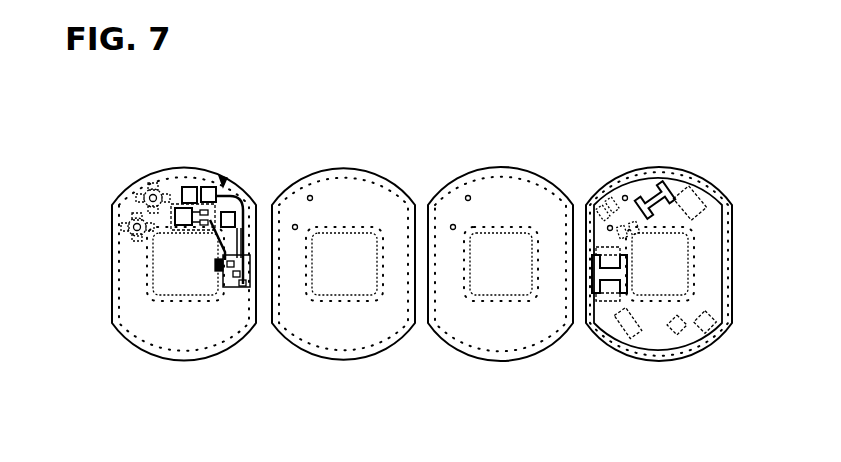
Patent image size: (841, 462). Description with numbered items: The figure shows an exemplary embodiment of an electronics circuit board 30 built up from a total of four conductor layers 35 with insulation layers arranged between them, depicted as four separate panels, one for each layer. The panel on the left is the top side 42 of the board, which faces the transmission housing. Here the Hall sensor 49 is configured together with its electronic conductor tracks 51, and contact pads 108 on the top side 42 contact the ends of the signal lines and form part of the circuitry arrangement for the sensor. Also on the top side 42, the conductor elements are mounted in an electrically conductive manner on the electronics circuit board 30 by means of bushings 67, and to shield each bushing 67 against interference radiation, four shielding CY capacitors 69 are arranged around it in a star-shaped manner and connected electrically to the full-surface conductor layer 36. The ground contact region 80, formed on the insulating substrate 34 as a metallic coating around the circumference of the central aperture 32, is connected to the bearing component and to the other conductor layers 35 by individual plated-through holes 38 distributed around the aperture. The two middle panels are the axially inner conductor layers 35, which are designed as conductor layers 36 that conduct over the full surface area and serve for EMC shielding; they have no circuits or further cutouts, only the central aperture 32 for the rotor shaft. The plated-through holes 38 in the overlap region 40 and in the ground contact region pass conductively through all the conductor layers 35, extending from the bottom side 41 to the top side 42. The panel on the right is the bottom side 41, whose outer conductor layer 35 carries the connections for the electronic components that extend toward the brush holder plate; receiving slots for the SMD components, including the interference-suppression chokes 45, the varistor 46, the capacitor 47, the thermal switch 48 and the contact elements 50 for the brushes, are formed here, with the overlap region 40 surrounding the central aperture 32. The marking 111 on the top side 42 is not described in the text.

The electronics circuit board 30 is at (732, 172).
The central aperture 32 is at (165, 285).
The insulating substrate 34 is at (186, 190).
The conductor layer 35 is at (128, 262).
The full-surface conductor layer 36 is at (457, 108).
The plated-through hole 38 is at (143, 347).
The overlap region 40 is at (683, 355).
The bottom side 41 is at (648, 328).
The top side 42 is at (205, 340).
The interference-suppression choke 45 is at (665, 187).
The varistor 46 is at (638, 236).
The capacitor 47 is at (612, 204).
The thermal switch 48 is at (718, 325).
The Hall sensor 49 is at (216, 266).
The contact element 50 is at (698, 200).
The conductor track 51 is at (250, 252).
The bushing 67 is at (131, 212).
The CY capacitor 69 is at (140, 200).
The ground contact region 80 is at (168, 303).
The contact pad 108 is at (150, 181).
The marking 111 is at (222, 179).